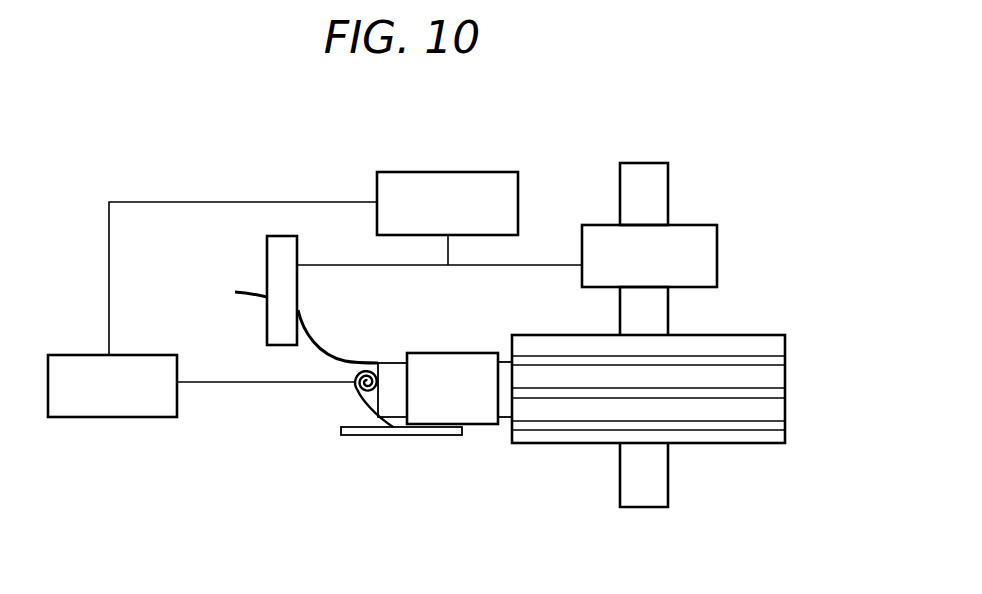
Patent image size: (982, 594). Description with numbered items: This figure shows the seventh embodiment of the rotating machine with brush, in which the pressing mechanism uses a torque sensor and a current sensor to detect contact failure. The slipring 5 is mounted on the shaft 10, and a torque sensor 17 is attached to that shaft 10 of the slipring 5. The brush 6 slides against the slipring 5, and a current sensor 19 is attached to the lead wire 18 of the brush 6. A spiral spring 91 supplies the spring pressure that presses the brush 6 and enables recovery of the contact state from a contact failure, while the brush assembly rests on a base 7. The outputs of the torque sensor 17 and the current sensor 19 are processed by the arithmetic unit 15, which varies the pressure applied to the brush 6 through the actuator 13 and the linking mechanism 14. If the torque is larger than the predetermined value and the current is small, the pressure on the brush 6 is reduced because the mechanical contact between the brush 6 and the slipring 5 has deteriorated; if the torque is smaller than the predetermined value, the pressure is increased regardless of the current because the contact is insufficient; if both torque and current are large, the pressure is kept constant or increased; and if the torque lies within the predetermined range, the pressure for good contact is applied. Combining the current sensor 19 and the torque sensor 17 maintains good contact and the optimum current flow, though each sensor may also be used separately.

The slipring 5 is at (565, 443).
The brush 6 is at (392, 362).
The base 7 is at (480, 420).
The shaft 10 is at (660, 200).
The actuator 13 is at (80, 417).
The linking mechanism 14 is at (235, 384).
The arithmetic unit 15 is at (480, 175).
The torque sensor 17 is at (705, 257).
The lead wire 18 is at (317, 345).
The current sensor 19 is at (275, 268).
The spiral spring 91 is at (360, 395).